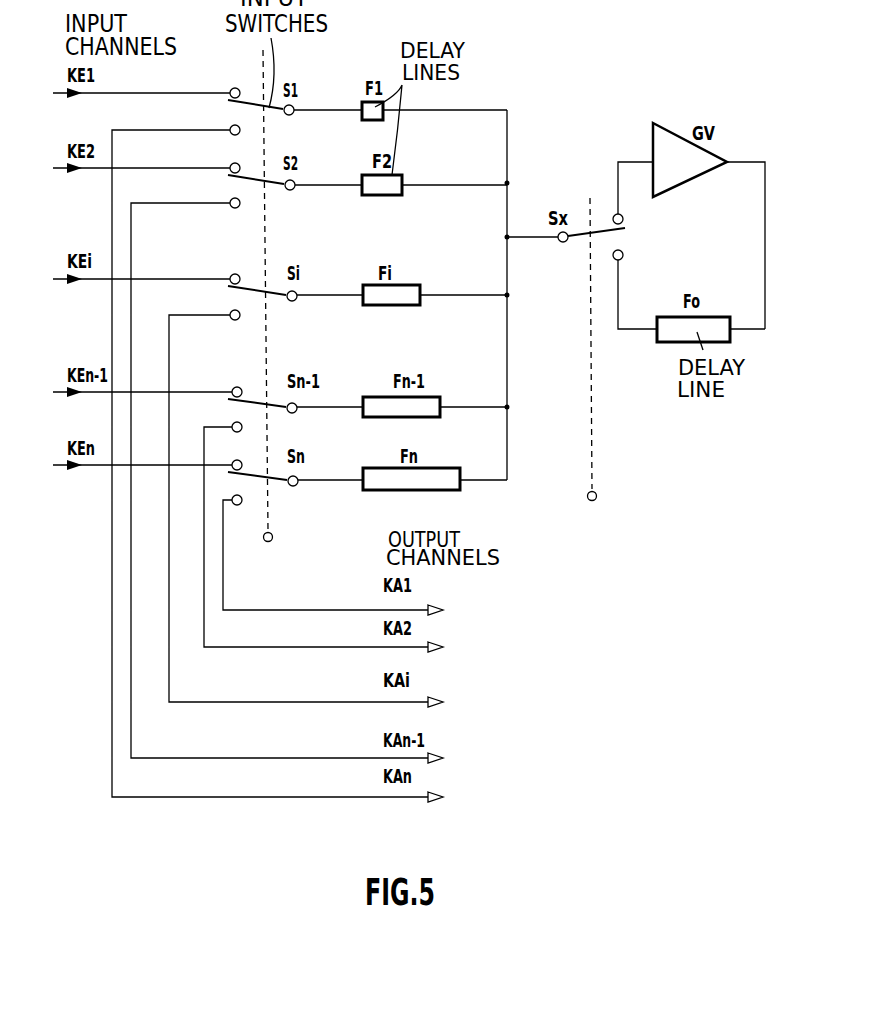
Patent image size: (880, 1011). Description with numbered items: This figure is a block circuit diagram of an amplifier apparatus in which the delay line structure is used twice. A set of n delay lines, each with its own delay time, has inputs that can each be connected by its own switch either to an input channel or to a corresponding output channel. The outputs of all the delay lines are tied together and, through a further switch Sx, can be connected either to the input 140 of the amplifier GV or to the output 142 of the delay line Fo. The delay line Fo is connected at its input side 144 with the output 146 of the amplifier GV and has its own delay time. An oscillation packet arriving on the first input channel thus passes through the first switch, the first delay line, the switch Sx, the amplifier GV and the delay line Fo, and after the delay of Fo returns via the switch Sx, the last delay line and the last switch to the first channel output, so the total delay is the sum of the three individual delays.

The input of amplifier 140 is at (645, 161).
The output of delay line 142 is at (647, 331).
The input side of delay line 144 is at (738, 331).
The output of amplifier 146 is at (733, 161).